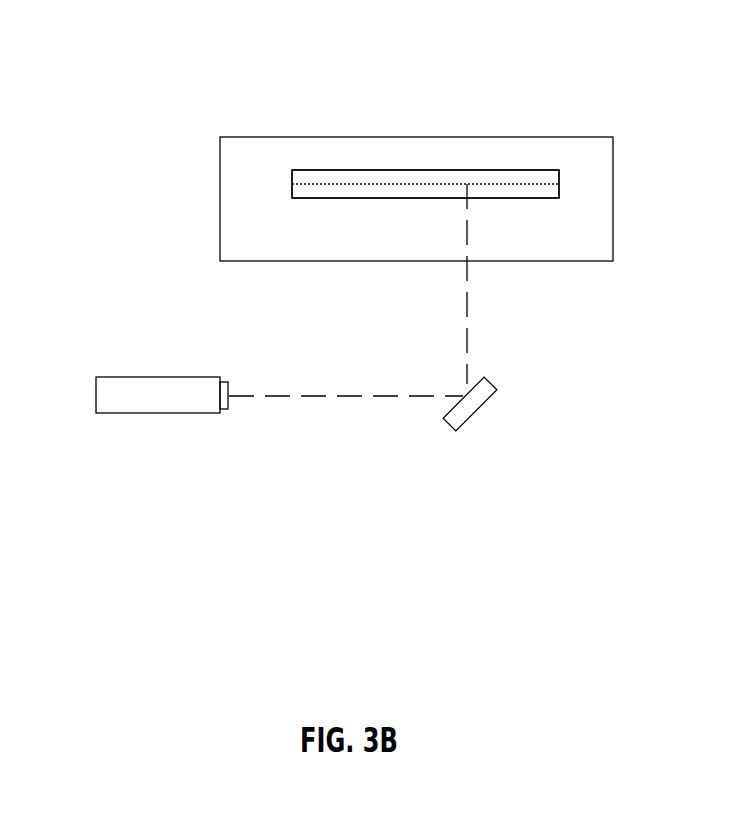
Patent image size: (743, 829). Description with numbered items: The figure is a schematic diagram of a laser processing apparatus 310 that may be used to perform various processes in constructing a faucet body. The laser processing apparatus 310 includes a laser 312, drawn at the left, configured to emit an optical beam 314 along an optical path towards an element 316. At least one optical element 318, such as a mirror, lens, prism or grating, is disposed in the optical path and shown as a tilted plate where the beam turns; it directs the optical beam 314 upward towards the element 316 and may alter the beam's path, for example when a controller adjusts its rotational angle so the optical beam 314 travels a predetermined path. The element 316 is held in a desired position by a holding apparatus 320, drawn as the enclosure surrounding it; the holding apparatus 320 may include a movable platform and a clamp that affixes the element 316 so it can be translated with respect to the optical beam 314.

The laser processing apparatus 310 is at (664, 144).
The laser 312 is at (96, 394).
The optical beam 314 is at (469, 284).
The element 316 is at (562, 188).
The optical element 318 is at (472, 417).
The holding apparatus 320 is at (220, 185).